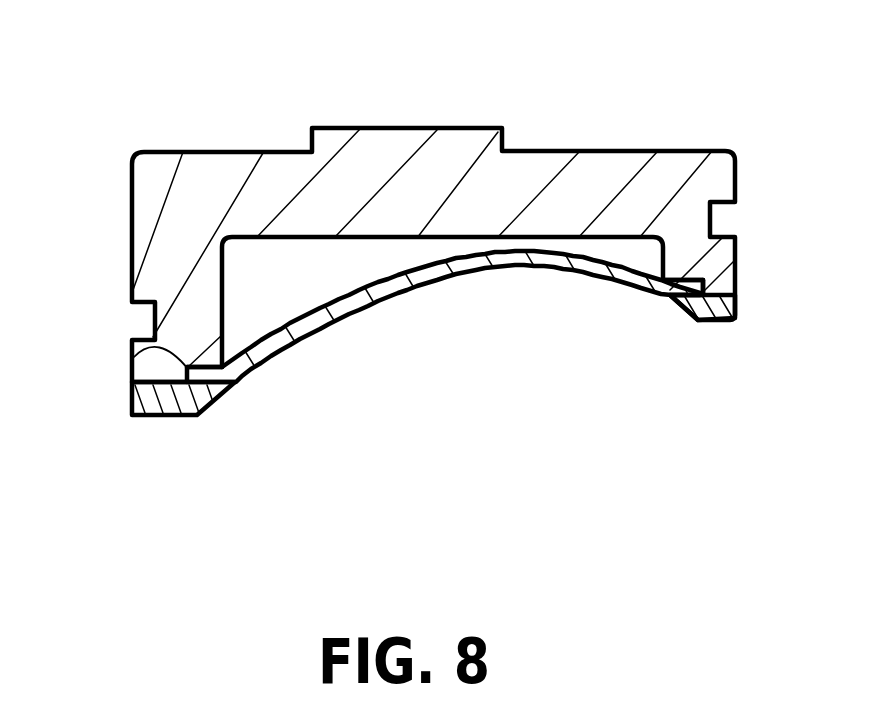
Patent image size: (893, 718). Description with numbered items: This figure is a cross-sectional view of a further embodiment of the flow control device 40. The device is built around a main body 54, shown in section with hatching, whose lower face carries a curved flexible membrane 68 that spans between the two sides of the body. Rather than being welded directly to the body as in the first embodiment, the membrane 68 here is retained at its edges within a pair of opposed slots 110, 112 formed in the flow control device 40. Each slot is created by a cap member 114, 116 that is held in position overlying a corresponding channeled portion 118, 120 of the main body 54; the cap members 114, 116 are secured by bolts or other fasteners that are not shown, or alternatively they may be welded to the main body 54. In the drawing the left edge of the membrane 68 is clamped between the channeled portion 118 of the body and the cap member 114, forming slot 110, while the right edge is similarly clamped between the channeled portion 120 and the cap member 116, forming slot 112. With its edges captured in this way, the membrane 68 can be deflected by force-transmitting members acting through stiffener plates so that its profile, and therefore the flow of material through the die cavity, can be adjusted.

The flow control device 40 is at (153, 208).
The main body 54 is at (590, 168).
The flexible membrane 68 is at (511, 268).
The slot 110 is at (231, 383).
The slot 112 is at (690, 288).
The cap member 114 is at (176, 417).
The cap member 116 is at (735, 307).
The channeled portion 118 is at (157, 340).
The channeled portion 120 is at (683, 277).